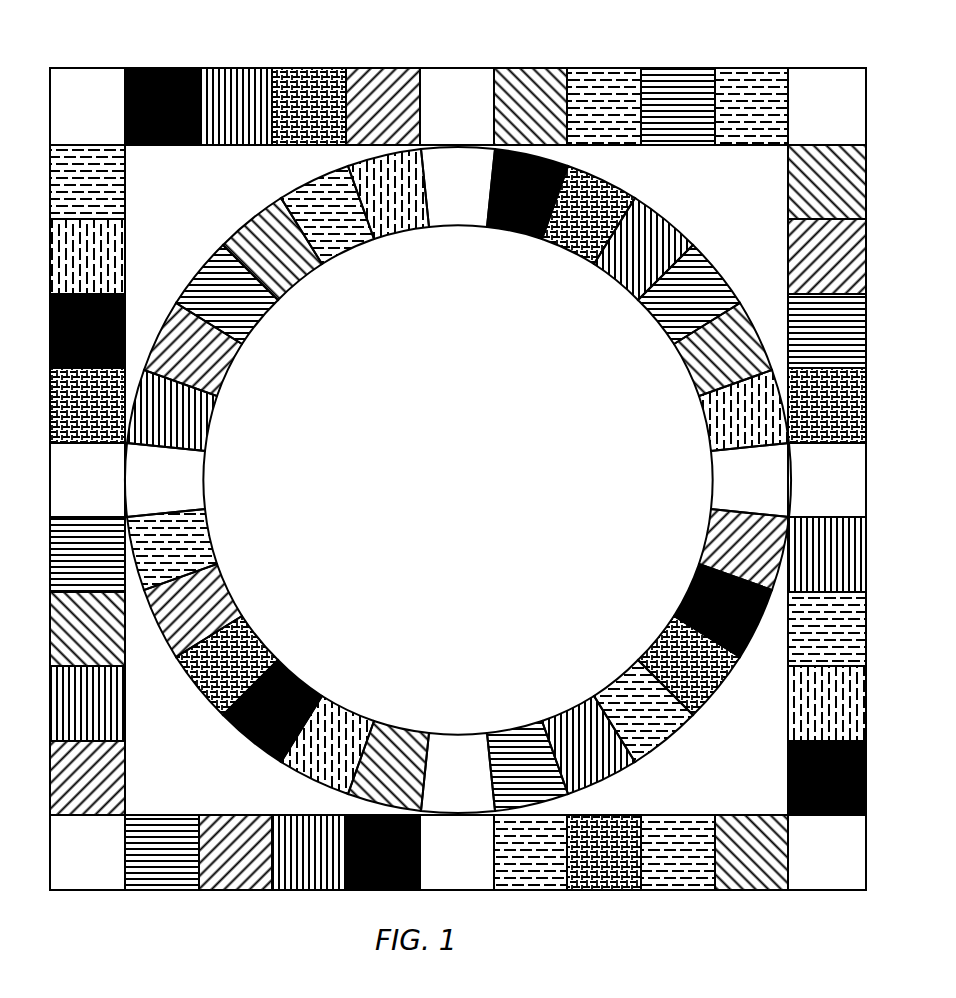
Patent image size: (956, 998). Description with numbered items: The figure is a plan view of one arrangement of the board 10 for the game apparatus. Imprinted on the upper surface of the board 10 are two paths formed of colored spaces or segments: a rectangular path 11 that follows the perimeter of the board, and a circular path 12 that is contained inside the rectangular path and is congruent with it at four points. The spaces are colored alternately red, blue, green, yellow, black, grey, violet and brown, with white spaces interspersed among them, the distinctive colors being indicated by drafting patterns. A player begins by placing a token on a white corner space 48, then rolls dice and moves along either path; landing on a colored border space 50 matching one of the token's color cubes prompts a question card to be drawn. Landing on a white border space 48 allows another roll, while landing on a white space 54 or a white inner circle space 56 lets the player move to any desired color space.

The board 10 is at (415, 58).
The rectangular path 11 is at (200, 147).
The circular path 12 is at (276, 296).
The corner space 48 is at (105, 830).
The border space 50 is at (690, 80).
The white space 54 is at (483, 80).
The white inner circle space 56 is at (452, 762).